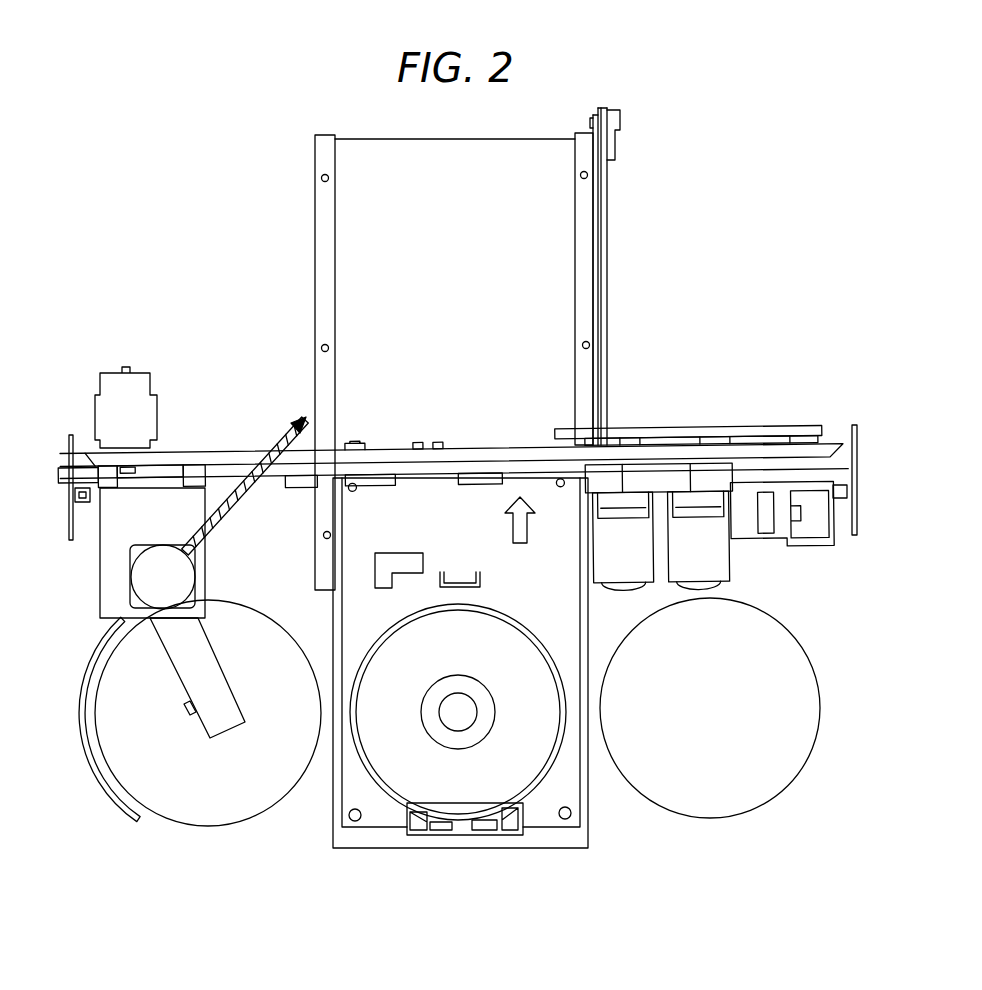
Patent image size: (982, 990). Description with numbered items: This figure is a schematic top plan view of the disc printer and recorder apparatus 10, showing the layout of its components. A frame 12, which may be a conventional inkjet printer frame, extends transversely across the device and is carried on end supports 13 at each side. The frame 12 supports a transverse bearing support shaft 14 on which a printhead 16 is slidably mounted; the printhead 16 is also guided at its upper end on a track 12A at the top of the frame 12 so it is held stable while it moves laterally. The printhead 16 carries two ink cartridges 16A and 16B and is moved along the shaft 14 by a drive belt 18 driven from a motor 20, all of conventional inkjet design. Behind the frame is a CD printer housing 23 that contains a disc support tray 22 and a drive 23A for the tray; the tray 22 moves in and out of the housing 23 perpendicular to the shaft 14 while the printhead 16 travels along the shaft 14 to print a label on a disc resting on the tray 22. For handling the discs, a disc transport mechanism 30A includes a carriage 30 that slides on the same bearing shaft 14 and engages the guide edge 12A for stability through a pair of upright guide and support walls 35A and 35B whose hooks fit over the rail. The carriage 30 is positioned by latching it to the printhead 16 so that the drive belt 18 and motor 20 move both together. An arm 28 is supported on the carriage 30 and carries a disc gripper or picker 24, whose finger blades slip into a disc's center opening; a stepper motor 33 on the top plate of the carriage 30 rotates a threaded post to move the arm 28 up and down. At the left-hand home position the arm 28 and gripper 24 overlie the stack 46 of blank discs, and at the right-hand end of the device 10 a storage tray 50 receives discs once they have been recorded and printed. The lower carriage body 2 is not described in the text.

The carriage base 2 is at (558, 793).
The disc printer and recorder apparatus 10 is at (657, 413).
The frame 12 is at (441, 457).
The track 12A is at (82, 478).
The end supports 13 is at (70, 512).
The bearing support shaft 14 is at (300, 485).
The printhead 16 is at (715, 568).
The ink cartridge 16A is at (712, 548).
The ink cartridge 16B is at (645, 577).
The drive belt 18 is at (512, 468).
The motor 20 is at (155, 397).
The disc support tray 22 is at (545, 706).
The CD printer housing 23 is at (353, 221).
The drive 23A is at (608, 240).
The disc gripper 24 is at (188, 716).
The arm 28 is at (198, 660).
The carriage 30 is at (146, 531).
The disc transport mechanism 30A is at (214, 571).
The stepper motor 33 is at (148, 578).
The guide and support wall 35A is at (108, 478).
The guide and support wall 35B is at (193, 476).
The stack of blank discs 46 is at (195, 820).
The storage tray 50 is at (812, 732).